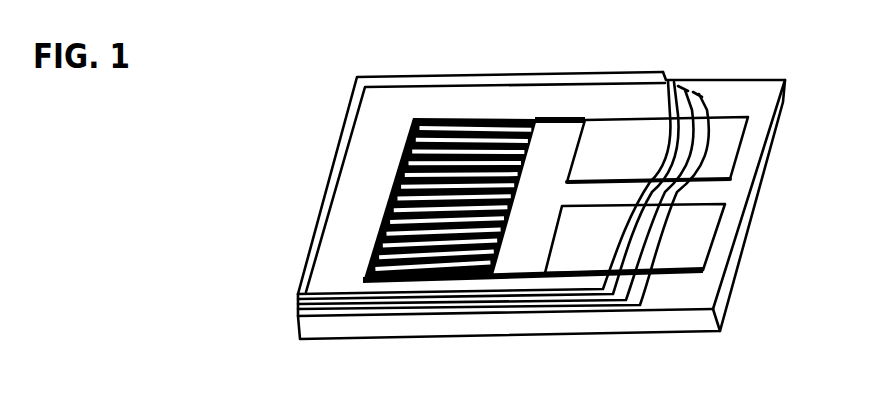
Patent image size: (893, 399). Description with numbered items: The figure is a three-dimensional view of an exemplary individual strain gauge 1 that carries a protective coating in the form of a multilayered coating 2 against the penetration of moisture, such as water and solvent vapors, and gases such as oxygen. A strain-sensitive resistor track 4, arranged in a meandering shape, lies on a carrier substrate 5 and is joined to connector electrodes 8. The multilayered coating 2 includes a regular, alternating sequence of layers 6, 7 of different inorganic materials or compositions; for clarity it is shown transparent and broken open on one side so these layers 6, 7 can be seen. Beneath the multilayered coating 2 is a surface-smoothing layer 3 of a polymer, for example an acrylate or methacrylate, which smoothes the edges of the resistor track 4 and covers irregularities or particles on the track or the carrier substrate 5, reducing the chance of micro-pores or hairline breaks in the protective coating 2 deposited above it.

The strain gauge 1 is at (663, 346).
The multilayered coating 2 is at (363, 182).
The surface-smoothing layer 3 is at (297, 323).
The strain-sensitive resistor track 4 is at (468, 121).
The carrier substrate 5 is at (737, 88).
The layer 6 is at (297, 297).
The layer 7 is at (300, 283).
The connector electrodes 8 is at (733, 142).